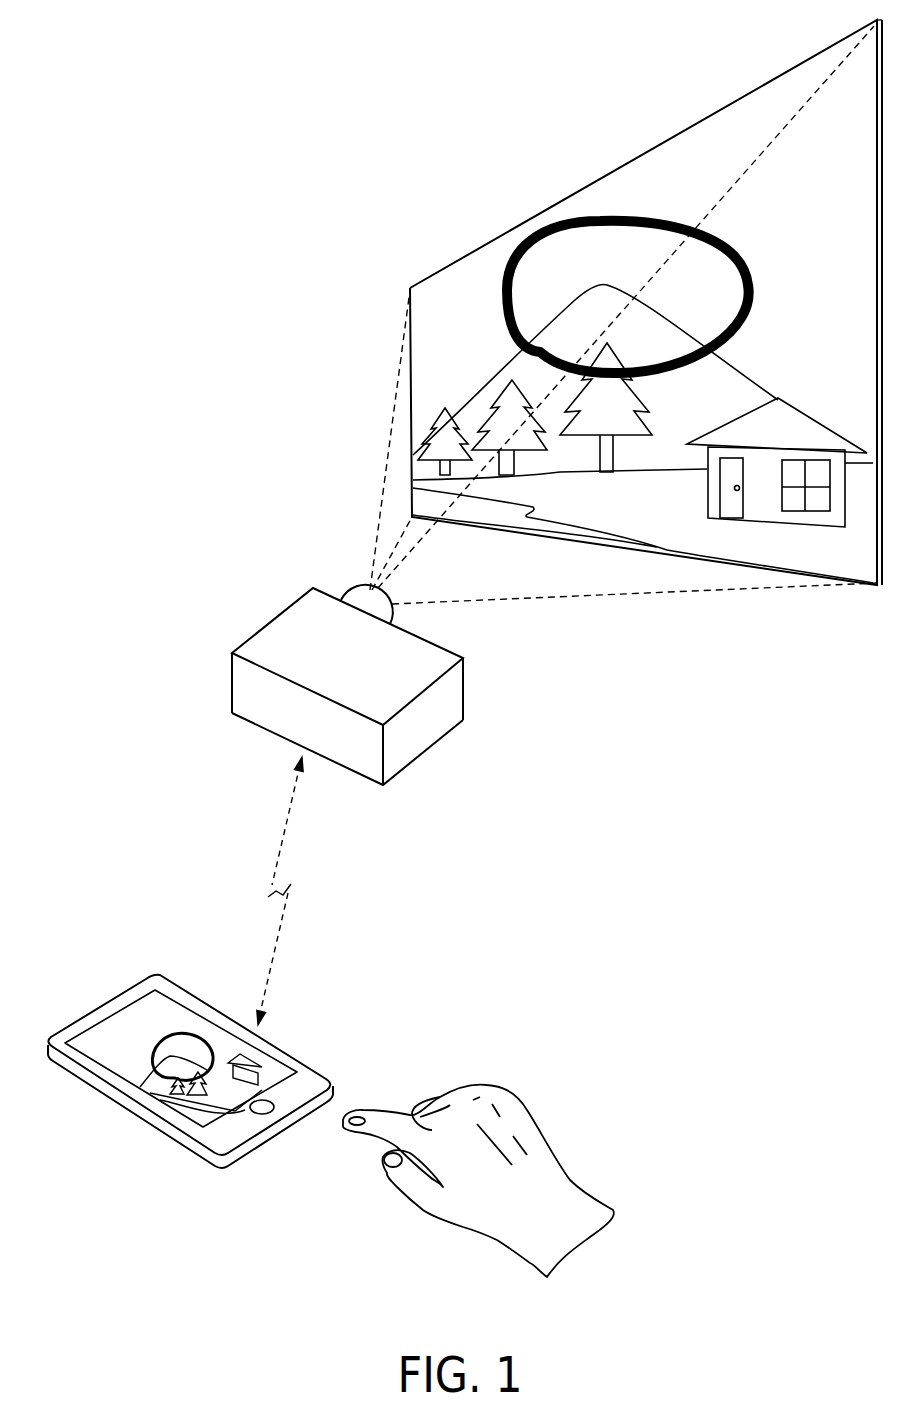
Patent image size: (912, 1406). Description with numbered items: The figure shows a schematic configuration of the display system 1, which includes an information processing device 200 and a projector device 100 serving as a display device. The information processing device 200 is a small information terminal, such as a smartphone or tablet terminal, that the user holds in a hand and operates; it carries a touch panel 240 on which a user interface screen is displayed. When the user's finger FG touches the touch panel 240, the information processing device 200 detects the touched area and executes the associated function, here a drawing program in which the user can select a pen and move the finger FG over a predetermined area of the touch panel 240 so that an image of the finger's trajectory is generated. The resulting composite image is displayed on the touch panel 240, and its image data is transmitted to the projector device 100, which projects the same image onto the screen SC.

The display system 1 is at (236, 211).
The screen SC is at (494, 233).
The projector device 100 is at (240, 683).
The information processing device 200 is at (213, 1010).
The touch panel 240 is at (120, 1057).
The finger FG is at (380, 1112).